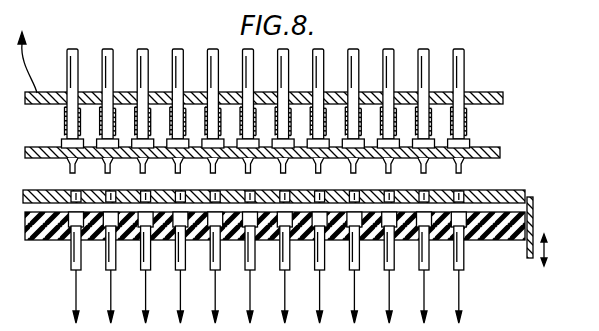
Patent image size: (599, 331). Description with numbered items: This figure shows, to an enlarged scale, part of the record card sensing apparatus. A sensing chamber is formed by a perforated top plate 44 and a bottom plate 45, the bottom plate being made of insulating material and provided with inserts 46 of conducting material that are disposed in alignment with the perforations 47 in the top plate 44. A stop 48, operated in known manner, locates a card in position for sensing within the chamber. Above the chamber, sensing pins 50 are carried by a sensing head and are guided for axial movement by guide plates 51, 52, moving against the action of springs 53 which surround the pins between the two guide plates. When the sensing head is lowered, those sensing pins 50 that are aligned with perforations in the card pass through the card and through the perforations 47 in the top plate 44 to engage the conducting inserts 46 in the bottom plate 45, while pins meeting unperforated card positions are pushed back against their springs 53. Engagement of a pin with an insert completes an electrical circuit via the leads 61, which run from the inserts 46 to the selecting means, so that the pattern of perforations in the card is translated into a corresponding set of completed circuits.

The perforated top plate 44 is at (509, 190).
The bottom plate 45 is at (483, 226).
The inserts 46 is at (470, 214).
The perforations 47 is at (461, 191).
The stop 48 is at (534, 221).
The sensing pins 50 is at (459, 49).
The guide plate 51 is at (485, 91).
The guide plate 52 is at (487, 147).
The springs 53 is at (468, 110).
The leads 61 is at (214, 297).